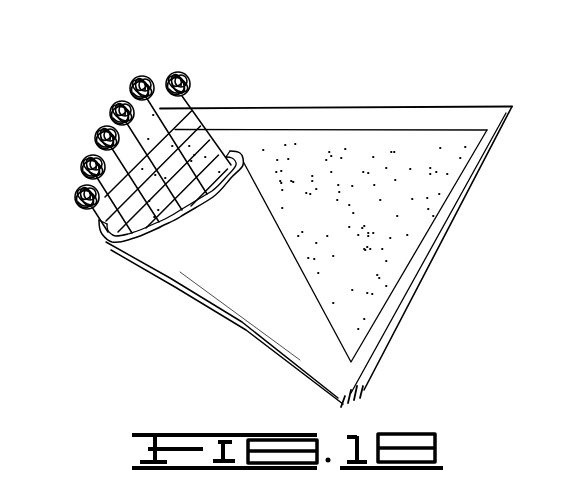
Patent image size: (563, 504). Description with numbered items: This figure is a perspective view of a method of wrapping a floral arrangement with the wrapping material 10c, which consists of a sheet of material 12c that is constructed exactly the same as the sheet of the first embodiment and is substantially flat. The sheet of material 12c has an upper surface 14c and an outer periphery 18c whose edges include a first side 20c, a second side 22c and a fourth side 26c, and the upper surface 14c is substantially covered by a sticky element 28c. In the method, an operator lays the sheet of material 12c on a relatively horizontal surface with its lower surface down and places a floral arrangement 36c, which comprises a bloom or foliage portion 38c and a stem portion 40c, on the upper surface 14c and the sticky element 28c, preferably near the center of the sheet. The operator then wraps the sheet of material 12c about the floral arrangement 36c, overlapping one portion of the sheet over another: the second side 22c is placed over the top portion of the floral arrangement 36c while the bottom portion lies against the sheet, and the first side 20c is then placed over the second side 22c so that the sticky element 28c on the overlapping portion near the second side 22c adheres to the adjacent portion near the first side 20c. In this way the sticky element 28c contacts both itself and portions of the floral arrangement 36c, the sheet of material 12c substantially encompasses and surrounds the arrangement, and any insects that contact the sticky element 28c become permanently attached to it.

The wrapping material 10c is at (237, 66).
The sheet of material 12c is at (378, 98).
The upper surface 14c is at (470, 160).
The outer periphery 18c is at (382, 340).
The first side 20c is at (424, 269).
The second side 22c is at (132, 247).
The fourth side 26c is at (272, 108).
The sticky element 28c is at (380, 235).
The floral arrangement 36c is at (173, 64).
The bloom or foliage portion 38c is at (120, 103).
The stem portion 40c is at (360, 391).